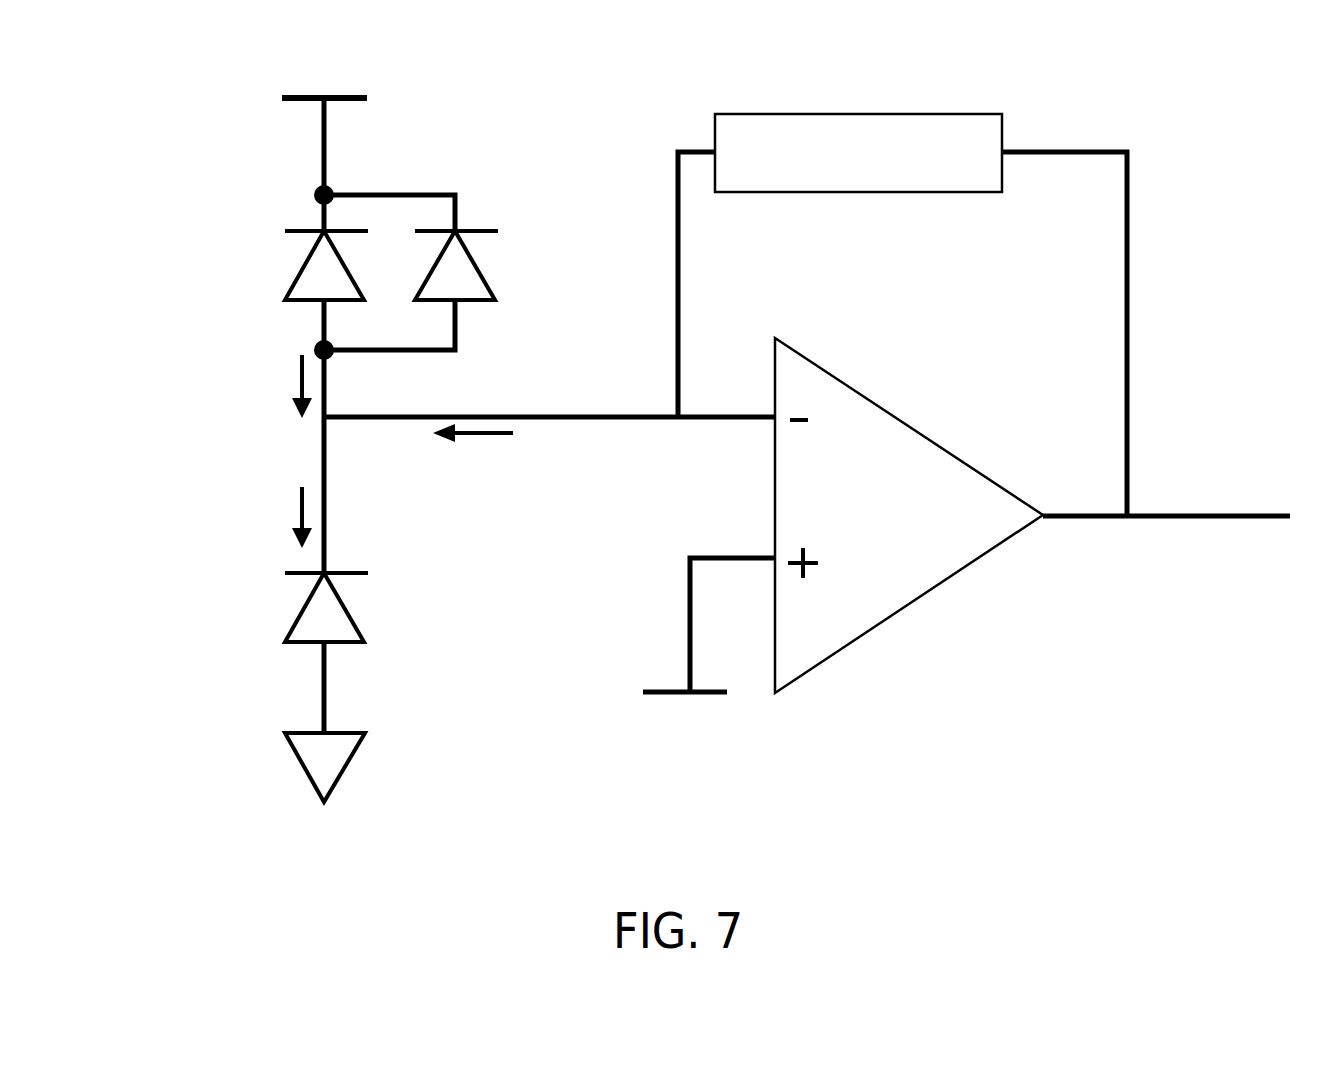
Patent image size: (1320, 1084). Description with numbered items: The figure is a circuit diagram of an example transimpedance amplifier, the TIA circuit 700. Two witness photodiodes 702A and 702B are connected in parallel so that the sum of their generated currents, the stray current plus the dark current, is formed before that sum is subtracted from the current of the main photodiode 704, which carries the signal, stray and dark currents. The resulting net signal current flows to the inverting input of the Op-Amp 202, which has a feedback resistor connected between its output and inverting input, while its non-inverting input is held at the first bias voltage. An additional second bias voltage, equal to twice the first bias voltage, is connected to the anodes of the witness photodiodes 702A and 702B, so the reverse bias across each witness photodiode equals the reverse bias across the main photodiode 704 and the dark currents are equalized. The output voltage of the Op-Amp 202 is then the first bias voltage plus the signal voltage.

The TIA circuit 700 is at (1200, 106).
The witness photodiode 702A is at (246, 244).
The witness photodiode 702B is at (536, 248).
The main photodiode 704 is at (398, 643).
The operational amplifier 202 is at (878, 535).